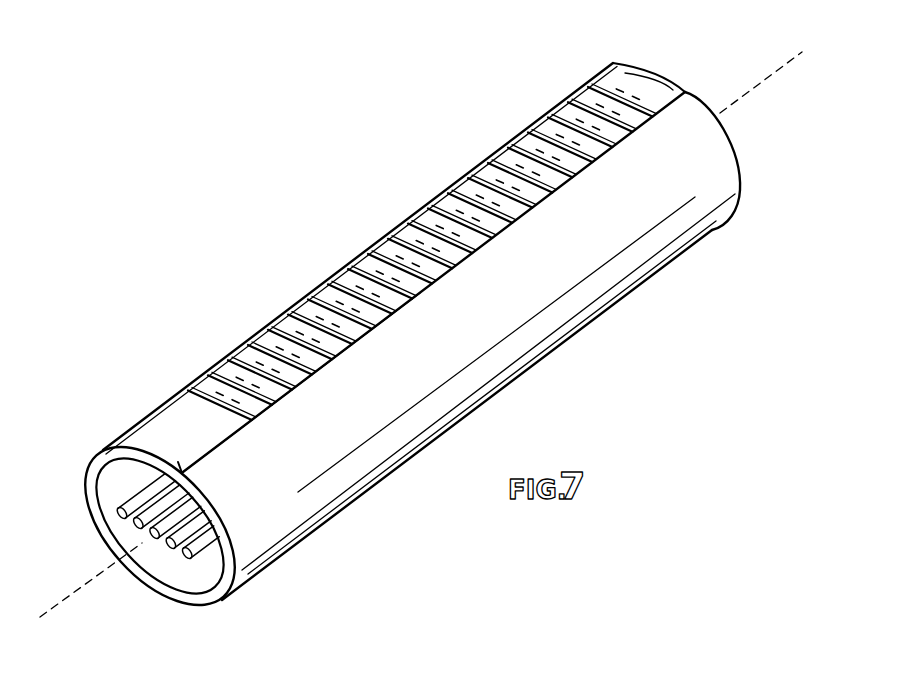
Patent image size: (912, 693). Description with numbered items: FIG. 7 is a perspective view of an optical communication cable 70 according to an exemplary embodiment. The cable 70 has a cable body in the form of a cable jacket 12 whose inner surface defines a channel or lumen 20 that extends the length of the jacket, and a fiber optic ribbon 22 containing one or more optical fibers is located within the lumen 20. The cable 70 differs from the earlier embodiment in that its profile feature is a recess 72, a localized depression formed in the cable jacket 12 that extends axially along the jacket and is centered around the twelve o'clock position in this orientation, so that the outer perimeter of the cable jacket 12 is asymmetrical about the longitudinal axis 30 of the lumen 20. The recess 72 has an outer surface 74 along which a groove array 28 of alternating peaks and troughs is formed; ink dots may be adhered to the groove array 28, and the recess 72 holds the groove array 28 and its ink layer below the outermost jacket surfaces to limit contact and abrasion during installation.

The cable jacket 12 is at (90, 473).
The lumen 20 is at (165, 561).
The fiber optic ribbon 22 is at (121, 514).
The groove array 28 is at (495, 188).
The longitudinal axis 30 is at (720, 113).
The optical communication cable 70 is at (378, 197).
The recess 72 is at (160, 450).
The outer surface 74 is at (183, 475).